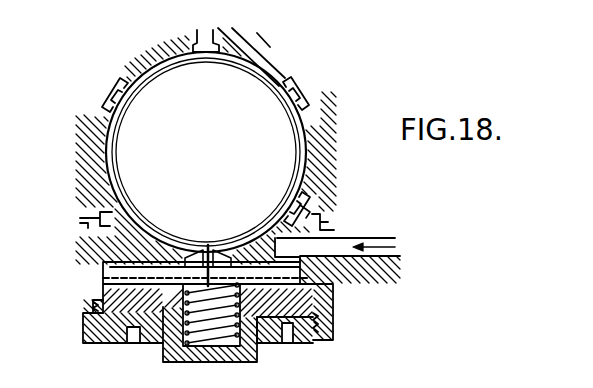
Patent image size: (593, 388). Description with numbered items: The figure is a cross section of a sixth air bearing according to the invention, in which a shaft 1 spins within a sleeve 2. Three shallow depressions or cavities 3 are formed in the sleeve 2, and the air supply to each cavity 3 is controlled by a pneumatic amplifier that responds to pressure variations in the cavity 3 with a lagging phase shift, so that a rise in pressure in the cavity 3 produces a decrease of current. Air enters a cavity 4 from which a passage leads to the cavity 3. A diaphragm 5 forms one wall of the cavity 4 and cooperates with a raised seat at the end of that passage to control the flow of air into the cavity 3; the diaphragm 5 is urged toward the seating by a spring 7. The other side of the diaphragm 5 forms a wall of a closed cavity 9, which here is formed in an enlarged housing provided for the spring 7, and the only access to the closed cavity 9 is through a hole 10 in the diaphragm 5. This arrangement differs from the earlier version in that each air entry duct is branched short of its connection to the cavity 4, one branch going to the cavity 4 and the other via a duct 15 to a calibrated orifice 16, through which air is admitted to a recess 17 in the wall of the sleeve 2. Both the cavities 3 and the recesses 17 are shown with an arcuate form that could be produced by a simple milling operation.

The shaft 1 is at (209, 149).
The sleeve 2 is at (270, 72).
The cavity 3 is at (104, 98).
The cavity 4 is at (332, 287).
The diaphragm 5 is at (165, 261).
The spring 7 is at (222, 332).
The closed cavity 9 is at (165, 352).
The hole 10 is at (208, 246).
The duct 15 is at (207, 29).
The calibrated orifice 16 is at (305, 204).
The recess 17 is at (217, 58).